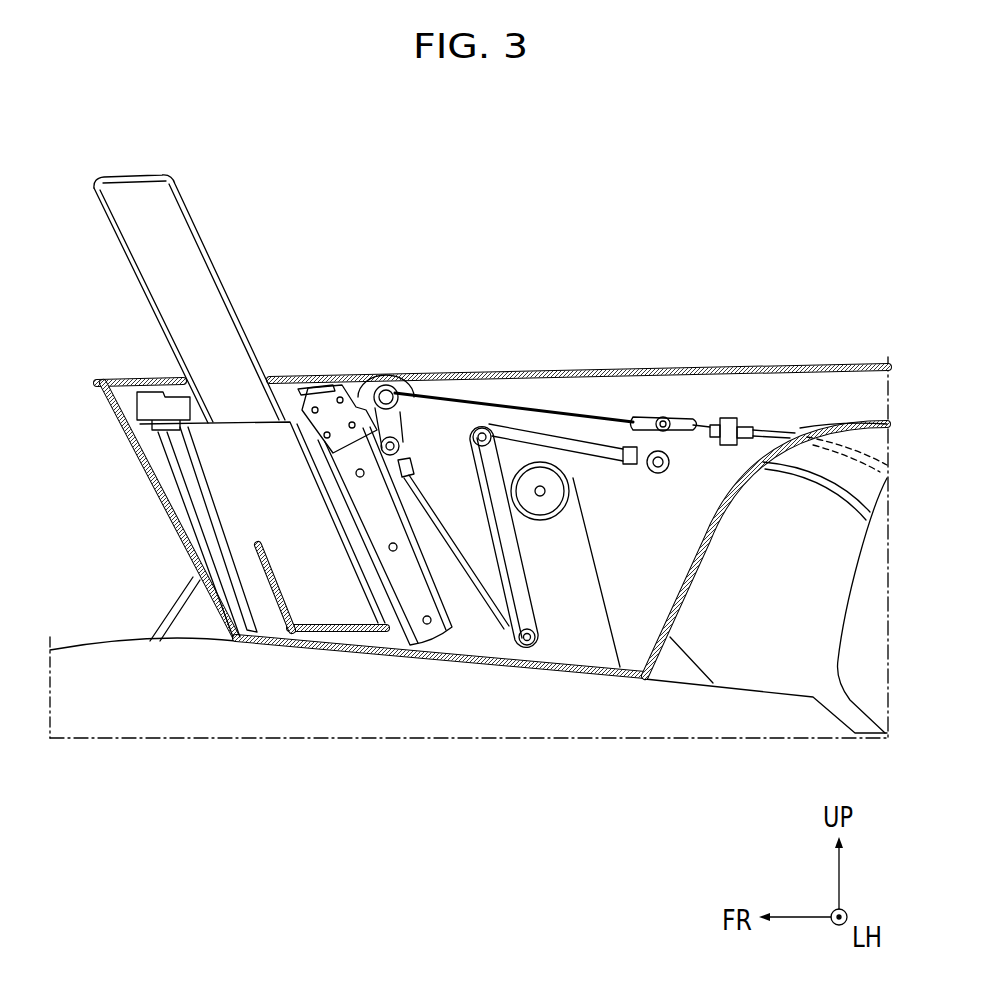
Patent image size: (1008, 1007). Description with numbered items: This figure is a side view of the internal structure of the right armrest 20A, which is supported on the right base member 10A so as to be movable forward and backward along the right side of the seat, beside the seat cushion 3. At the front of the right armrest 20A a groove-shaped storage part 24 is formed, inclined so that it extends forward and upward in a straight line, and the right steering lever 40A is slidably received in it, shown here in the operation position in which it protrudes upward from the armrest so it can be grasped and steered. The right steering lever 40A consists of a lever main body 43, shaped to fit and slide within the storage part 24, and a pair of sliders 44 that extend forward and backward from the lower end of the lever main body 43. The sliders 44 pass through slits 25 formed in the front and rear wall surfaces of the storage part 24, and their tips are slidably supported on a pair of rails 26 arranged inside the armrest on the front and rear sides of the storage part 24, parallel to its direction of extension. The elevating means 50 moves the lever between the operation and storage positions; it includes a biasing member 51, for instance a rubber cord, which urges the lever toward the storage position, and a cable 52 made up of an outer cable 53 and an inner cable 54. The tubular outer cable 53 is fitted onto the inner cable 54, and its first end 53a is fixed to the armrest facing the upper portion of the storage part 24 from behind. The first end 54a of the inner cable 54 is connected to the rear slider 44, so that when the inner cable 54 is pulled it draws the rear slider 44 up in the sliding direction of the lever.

The seat cushion 3 is at (108, 652).
The right base member 10A is at (835, 472).
The right armrest 20A is at (634, 362).
The storage part 24 is at (210, 480).
The slits 25 is at (330, 518).
The rails 26 is at (398, 520).
The right steering lever 40A is at (191, 281).
The lever main body 43 is at (128, 220).
The sliders 44 is at (156, 397).
The elevating means 50 is at (713, 398).
The biasing member 51 is at (513, 567).
The cable 52 is at (791, 407).
The outer cable 53 is at (763, 430).
The first end of the outer cable 53a is at (722, 440).
The inner cable 54 is at (556, 405).
The first end of the inner cable 54a is at (418, 402).